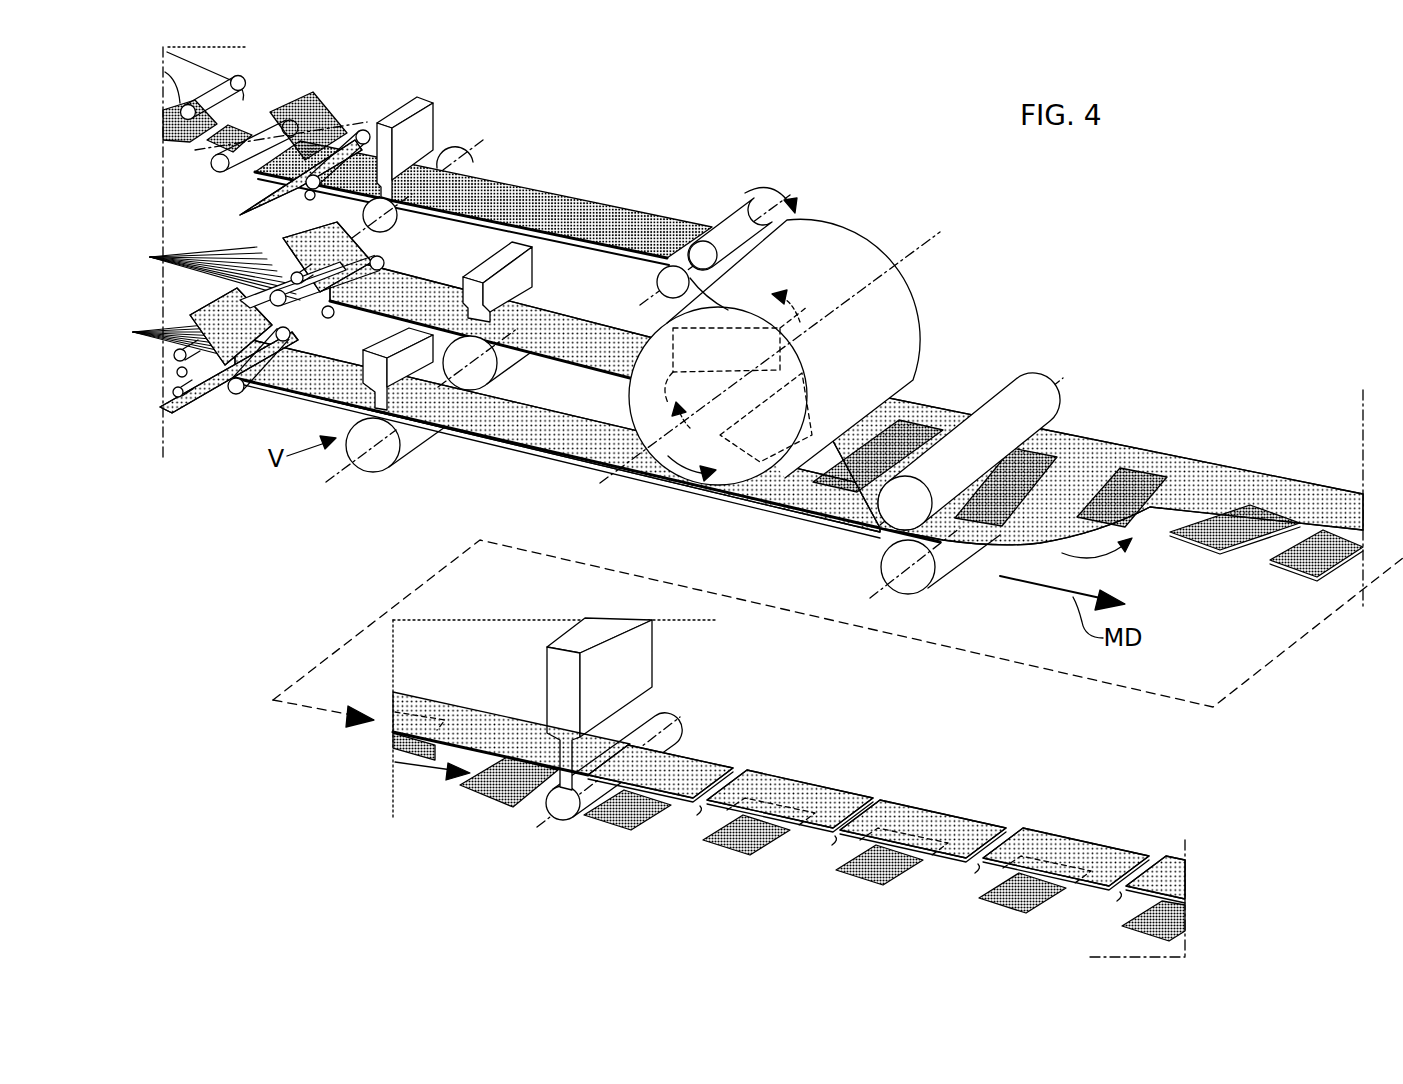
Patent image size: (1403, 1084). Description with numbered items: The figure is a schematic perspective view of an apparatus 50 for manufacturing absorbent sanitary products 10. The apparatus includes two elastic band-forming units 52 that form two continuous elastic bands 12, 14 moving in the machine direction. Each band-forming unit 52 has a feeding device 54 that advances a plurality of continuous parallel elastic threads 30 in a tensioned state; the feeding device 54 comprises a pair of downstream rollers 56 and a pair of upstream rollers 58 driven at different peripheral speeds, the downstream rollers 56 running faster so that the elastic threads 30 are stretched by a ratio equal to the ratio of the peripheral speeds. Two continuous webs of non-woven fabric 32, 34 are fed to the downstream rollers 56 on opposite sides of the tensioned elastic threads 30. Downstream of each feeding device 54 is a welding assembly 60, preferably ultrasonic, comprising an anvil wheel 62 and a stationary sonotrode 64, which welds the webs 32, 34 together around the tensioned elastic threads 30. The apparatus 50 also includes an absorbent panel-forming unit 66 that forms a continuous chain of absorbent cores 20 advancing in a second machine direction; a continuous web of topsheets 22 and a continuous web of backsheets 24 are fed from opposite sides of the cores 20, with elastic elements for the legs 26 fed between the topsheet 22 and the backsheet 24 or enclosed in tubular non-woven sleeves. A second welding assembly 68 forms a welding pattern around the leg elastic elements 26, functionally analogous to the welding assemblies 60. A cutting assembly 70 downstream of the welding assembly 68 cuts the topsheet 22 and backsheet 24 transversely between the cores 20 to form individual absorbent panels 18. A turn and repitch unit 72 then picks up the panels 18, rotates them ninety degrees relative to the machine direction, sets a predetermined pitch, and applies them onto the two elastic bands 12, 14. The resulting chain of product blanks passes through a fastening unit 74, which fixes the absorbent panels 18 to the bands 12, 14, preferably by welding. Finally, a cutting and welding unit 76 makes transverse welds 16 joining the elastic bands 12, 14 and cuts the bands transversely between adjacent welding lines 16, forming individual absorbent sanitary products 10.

The absorbent sanitary product 10 is at (820, 770).
The continuous elastic band 12 is at (838, 530).
The continuous elastic band 14 is at (582, 308).
The transverse weld 16 is at (702, 812).
The absorbent panel 18 is at (795, 346).
The absorbent core 20 is at (234, 123).
The topsheet 22 is at (272, 192).
The backsheet 24 is at (327, 93).
The elastic elements for the legs 26 is at (166, 78).
The elastic threads 30 is at (152, 257).
The web of non-woven fabric 32 is at (328, 224).
The web of non-woven fabric 34 is at (294, 329).
The apparatus 50 is at (1176, 242).
The elastic band-forming unit 52 is at (268, 238).
The feeding device 54 is at (256, 295).
The pair of downstream rollers 56 is at (384, 263).
The pair of upstream rollers 58 is at (302, 274).
The welding assembly 60 is at (358, 474).
The anvil wheel 62 is at (381, 469).
The stationary sonotrode 64 is at (478, 270).
The absorbent panel-forming unit 66 is at (586, 150).
The second welding assembly 68 is at (458, 112).
The cutting assembly 70 is at (738, 186).
The turn and repitch unit 72 is at (921, 288).
The fastening unit 74 is at (1036, 372).
The cutting and welding unit 76 is at (532, 838).